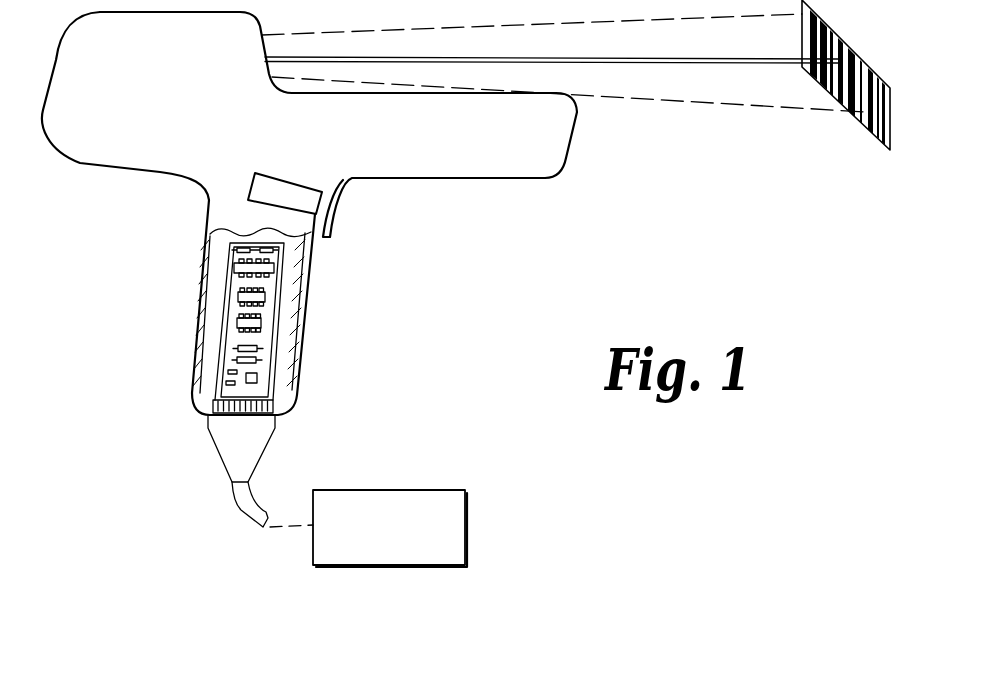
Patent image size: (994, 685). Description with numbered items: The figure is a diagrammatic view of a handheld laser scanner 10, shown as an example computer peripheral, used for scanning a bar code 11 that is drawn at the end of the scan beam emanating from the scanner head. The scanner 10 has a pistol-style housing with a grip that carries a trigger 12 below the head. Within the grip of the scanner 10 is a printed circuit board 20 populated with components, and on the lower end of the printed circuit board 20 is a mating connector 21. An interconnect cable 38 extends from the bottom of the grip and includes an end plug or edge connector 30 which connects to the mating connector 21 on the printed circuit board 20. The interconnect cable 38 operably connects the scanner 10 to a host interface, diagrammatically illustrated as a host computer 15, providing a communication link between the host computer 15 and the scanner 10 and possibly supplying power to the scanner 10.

The handheld laser scanner 10 is at (147, 173).
The bar code 11 is at (877, 132).
The trigger 12 is at (332, 218).
The host computer 15 is at (393, 566).
The printed circuit board 20 is at (281, 357).
The mating connector 21 is at (268, 403).
The end plug or edge connector 30 is at (257, 432).
The interconnect cable 38 is at (245, 505).